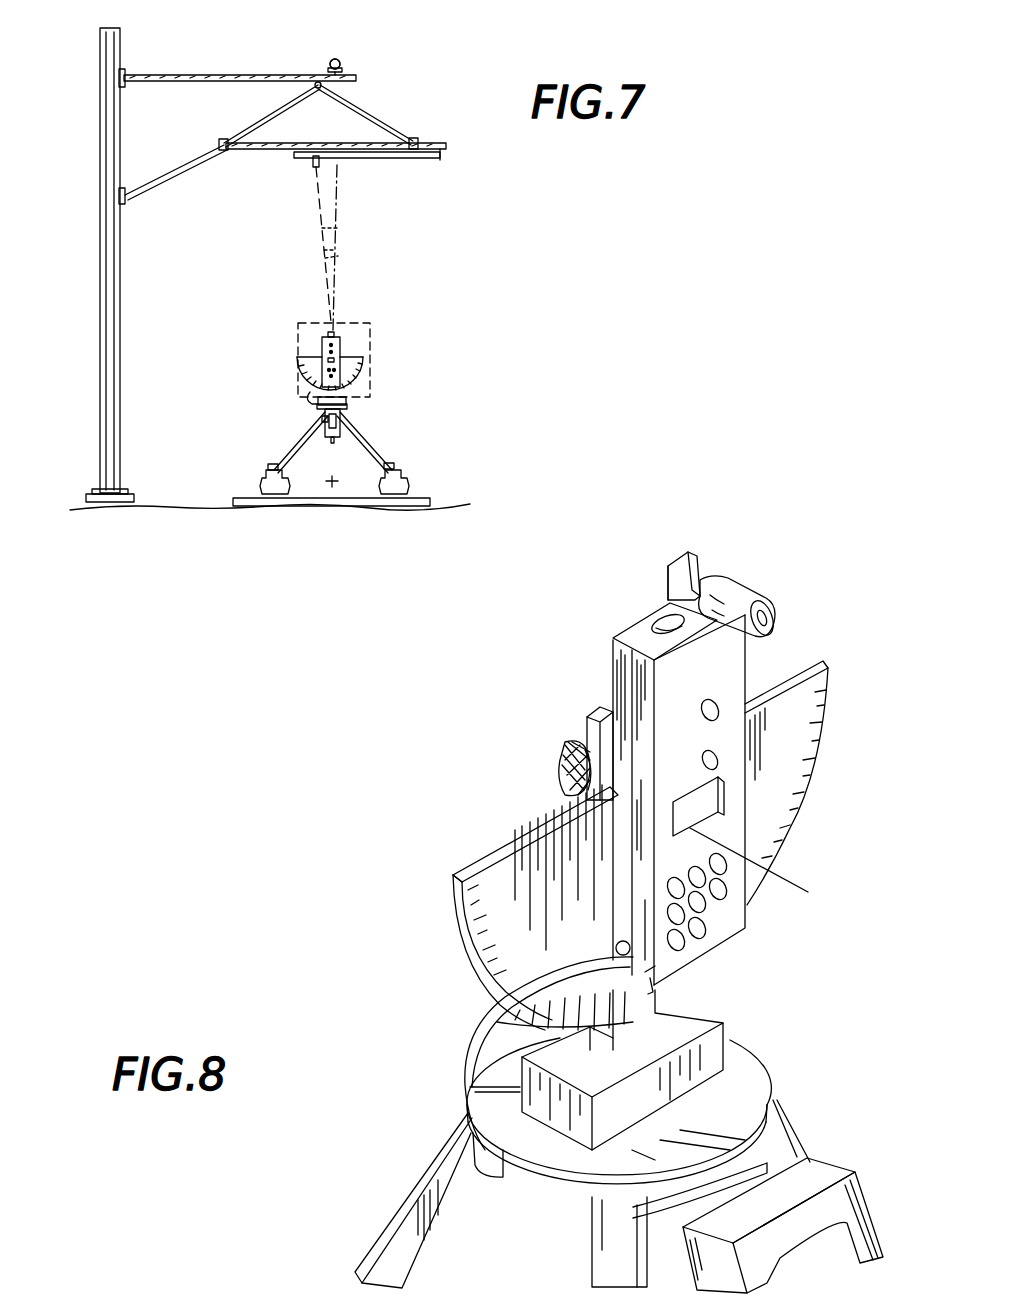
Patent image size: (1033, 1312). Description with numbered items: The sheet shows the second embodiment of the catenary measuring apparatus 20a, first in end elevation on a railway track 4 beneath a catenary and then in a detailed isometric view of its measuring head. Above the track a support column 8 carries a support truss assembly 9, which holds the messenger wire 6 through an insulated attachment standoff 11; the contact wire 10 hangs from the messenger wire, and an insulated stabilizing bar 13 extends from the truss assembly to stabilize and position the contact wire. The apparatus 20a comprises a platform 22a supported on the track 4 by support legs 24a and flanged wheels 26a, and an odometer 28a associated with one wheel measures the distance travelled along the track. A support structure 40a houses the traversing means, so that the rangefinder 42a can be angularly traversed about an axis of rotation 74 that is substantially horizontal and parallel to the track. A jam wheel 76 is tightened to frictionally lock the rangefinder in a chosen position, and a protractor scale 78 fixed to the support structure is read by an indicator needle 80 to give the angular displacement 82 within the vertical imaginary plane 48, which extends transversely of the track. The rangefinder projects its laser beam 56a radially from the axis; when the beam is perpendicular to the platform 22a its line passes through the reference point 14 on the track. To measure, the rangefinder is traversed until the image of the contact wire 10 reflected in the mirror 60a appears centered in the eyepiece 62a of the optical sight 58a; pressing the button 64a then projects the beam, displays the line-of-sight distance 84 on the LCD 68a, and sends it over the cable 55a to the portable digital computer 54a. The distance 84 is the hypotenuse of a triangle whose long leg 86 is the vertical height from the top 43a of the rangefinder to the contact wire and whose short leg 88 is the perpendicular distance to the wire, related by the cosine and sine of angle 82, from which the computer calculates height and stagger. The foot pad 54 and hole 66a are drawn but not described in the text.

In FIG. 7, the railway track 4 is at (482, 500).
In FIG. 7, the messenger wire 6 is at (336, 58).
In FIG. 7, the support column 8 is at (100, 136).
In FIG. 7, the support truss assembly 9 is at (206, 77).
In FIG. 7, the contact wire 10 is at (310, 160).
In FIG. 7, the insulated attachment standoff 11 is at (342, 68).
In FIG. 7, the insulated stabilizing bar 13 is at (425, 160).
In FIG. 7, the reference point 14 is at (336, 490).
In FIG. 7, the catenary measuring apparatus 20a is at (453, 376).
In FIG. 8, the catenary measuring apparatus 20a is at (455, 860).
In FIG. 7, the platform 22a is at (347, 407).
In FIG. 8, the platform 22a is at (760, 1072).
In FIG. 7, the support legs 24a is at (370, 434).
In FIG. 8, the support legs 24a is at (430, 1172).
In FIG. 7, the flanged wheels 26a is at (405, 468).
In FIG. 7, the odometer 28a is at (292, 492).
In FIG. 8, the support structure 40a is at (655, 1035).
In FIG. 8, the rangefinder 42a is at (735, 662).
In FIG. 8, the top of rangefinder 43a is at (612, 625).
In FIG. 7, the imaginary plane 48 is at (372, 330).
In FIG. 8, the foot pad 54 is at (815, 1165).
In FIG. 7, the portable digital computer 54a is at (310, 422).
In FIG. 7, the cable 55a is at (300, 390).
In FIG. 8, the cable 55a is at (482, 1005).
In FIG. 7, the laser beam 56a is at (326, 250).
In FIG. 8, the optical sight 58a is at (742, 570).
In FIG. 8, the mirror 60a is at (697, 556).
In FIG. 8, the eyepiece 62a is at (770, 605).
In FIG. 8, the button 64a is at (758, 700).
In FIG. 8, the hole 66a is at (652, 620).
In FIG. 8, the LCD 68a is at (712, 820).
In FIG. 8, the axis of rotation 74 is at (555, 753).
In FIG. 8, the jam wheel 76 is at (562, 768).
In FIG. 8, the protractor scale 78 is at (783, 748).
In FIG. 8, the indicator needle 80 is at (657, 984).
In FIG. 7, the angular displacement 82 is at (335, 258).
In FIG. 7, the line-of-sight distance 84 is at (320, 232).
In FIG. 7, the long leg 86 is at (335, 228).
In FIG. 7, the short leg 88 is at (340, 160).